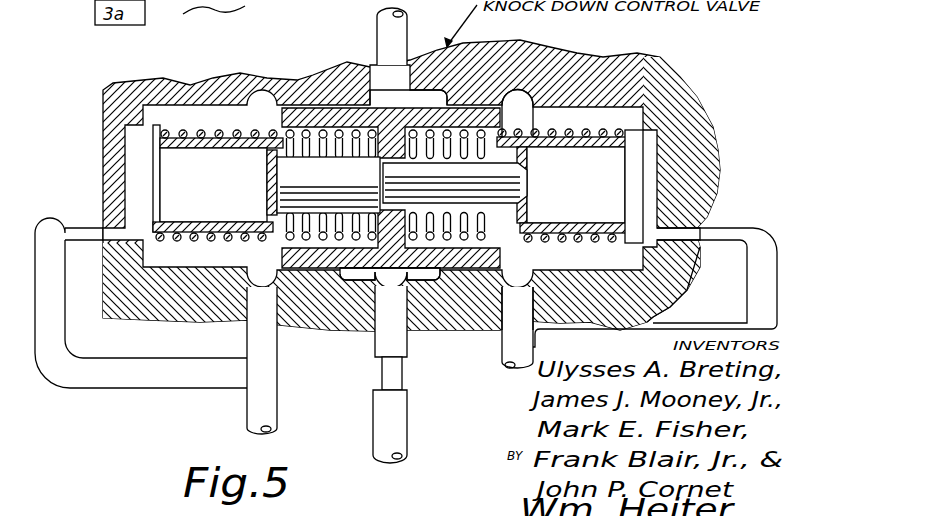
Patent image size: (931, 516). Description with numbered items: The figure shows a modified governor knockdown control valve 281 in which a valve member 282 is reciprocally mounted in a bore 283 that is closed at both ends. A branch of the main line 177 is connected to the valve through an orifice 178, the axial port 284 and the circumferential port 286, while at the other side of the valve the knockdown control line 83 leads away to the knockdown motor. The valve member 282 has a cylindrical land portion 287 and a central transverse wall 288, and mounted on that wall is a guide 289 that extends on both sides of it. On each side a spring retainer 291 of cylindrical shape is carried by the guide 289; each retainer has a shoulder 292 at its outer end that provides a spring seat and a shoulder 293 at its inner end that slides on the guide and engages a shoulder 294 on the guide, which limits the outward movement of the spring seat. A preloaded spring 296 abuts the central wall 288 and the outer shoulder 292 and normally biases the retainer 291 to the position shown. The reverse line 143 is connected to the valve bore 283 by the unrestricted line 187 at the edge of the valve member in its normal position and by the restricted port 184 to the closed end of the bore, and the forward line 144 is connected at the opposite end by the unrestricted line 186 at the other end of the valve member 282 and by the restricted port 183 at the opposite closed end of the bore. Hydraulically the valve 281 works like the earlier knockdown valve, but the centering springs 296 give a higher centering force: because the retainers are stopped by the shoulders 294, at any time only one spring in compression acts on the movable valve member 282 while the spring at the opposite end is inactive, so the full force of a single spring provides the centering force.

The knockdown control line 83 is at (404, 24).
The reverse line 143 is at (258, 409).
The forward line 144 is at (513, 373).
The main line 177 is at (387, 428).
The orifice 178 is at (387, 372).
The restricted port 183 is at (720, 230).
The restricted port 184 is at (85, 229).
The unrestricted line 186 is at (507, 330).
The unrestricted line 187 is at (273, 343).
The knockdown control valve 281 is at (627, 50).
The valve member 282 is at (435, 92).
The bore 283 is at (554, 108).
The axial port 284 is at (430, 277).
The circumferential port 286 is at (367, 283).
The cylindrical land portion 287 is at (313, 102).
The central transverse wall 288 is at (387, 170).
The guide 289 is at (520, 215).
The spring retainer 291 is at (177, 153).
The shoulder 292 is at (153, 238).
The shoulder 293 is at (280, 160).
The shoulder 294 is at (267, 160).
The preloaded spring 296 is at (220, 133).